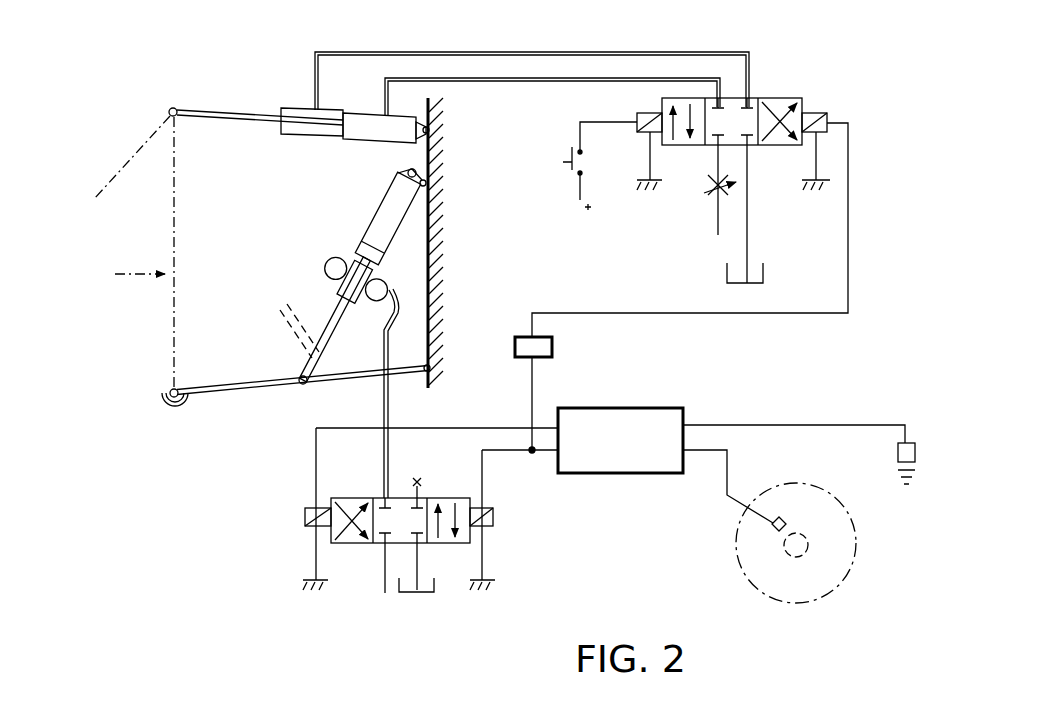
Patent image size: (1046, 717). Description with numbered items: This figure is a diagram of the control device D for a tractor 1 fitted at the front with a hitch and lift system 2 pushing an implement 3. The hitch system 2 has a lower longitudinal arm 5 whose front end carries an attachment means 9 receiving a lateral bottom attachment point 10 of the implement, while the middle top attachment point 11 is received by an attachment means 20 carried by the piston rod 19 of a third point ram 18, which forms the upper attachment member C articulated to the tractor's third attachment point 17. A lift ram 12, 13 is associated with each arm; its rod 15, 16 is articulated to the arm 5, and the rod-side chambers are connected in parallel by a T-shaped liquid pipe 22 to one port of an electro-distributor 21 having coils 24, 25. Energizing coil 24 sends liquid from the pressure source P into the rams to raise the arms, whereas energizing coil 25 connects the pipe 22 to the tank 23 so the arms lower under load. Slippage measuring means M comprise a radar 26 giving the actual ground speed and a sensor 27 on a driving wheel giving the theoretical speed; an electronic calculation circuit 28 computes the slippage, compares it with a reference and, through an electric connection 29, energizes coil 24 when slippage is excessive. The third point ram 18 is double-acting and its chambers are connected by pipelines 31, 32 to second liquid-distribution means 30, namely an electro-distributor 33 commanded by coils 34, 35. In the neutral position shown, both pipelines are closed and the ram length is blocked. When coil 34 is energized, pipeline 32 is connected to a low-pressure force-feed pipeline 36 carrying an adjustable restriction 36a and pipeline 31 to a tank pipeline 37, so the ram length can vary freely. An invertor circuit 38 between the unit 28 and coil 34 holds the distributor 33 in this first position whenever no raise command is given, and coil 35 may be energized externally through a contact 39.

The tractor 1 is at (450, 256).
The hitch and lift system 2 is at (238, 420).
The implement 3 is at (130, 271).
The lower longitudinal arm 5 is at (262, 378).
The attachment means 9 is at (165, 402).
The lateral bottom attachment point 10 is at (168, 388).
The middle top attachment point 11 is at (178, 122).
The lift ram 12 is at (385, 245).
The lift ram 13 is at (382, 218).
The piston rod 15 is at (327, 343).
The piston rod 16 is at (316, 322).
The third attachment point 17 is at (432, 128).
The third point ram 18 is at (335, 140).
The piston rod 19 is at (253, 116).
The attachment means 20 is at (170, 104).
The electro-distributor 21 is at (438, 494).
The liquid pipe 22 is at (383, 395).
The tank 23 is at (425, 593).
The electromagnet coil 24 is at (494, 520).
The electromagnet coil 25 is at (304, 516).
The radar 26 is at (898, 448).
The sensor 27 is at (770, 535).
The electronic calculation circuit 28 is at (640, 408).
The electric connection 29 is at (512, 452).
The second liquid-distribution means 30 is at (768, 153).
The pipeline 31 is at (549, 77).
The pipeline 32 is at (490, 51).
The electro-distributor 33 is at (706, 150).
The electromagnetic coil 34 is at (820, 113).
The electromagnetic coil 35 is at (640, 132).
The pipeline 36 is at (718, 238).
The adjustable restriction 36a is at (712, 196).
The pipeline 37 is at (748, 238).
The invertor circuit 38 is at (520, 337).
The contact 39 is at (565, 160).
The upper attachment member C is at (225, 93).
The control device D is at (798, 80).
The slippage measuring means M is at (848, 462).
The pressure source P is at (383, 580).